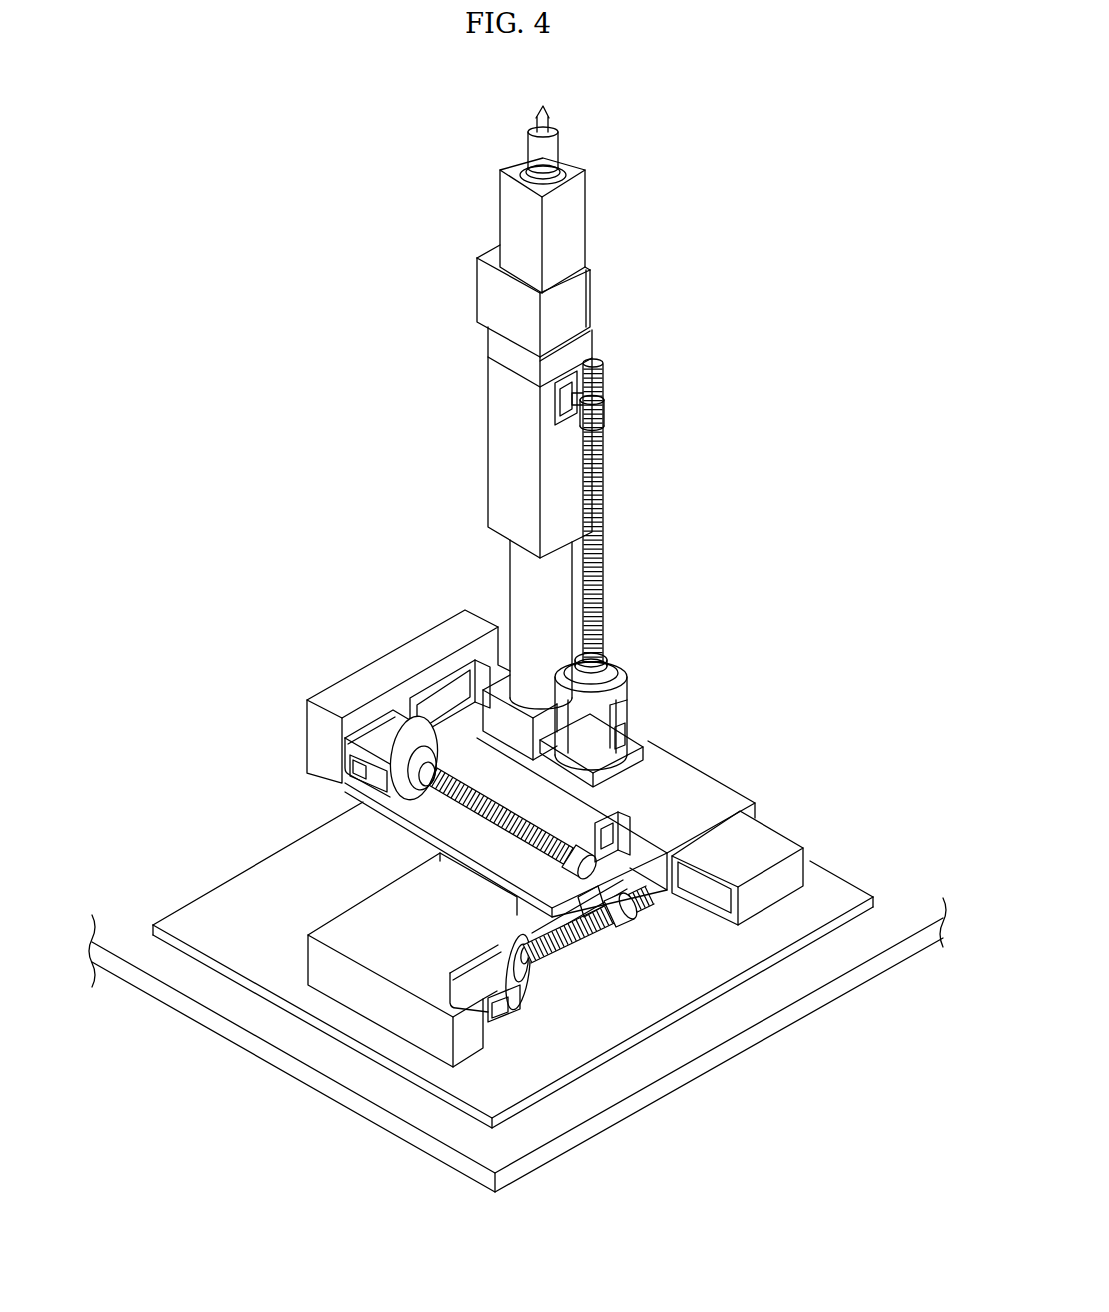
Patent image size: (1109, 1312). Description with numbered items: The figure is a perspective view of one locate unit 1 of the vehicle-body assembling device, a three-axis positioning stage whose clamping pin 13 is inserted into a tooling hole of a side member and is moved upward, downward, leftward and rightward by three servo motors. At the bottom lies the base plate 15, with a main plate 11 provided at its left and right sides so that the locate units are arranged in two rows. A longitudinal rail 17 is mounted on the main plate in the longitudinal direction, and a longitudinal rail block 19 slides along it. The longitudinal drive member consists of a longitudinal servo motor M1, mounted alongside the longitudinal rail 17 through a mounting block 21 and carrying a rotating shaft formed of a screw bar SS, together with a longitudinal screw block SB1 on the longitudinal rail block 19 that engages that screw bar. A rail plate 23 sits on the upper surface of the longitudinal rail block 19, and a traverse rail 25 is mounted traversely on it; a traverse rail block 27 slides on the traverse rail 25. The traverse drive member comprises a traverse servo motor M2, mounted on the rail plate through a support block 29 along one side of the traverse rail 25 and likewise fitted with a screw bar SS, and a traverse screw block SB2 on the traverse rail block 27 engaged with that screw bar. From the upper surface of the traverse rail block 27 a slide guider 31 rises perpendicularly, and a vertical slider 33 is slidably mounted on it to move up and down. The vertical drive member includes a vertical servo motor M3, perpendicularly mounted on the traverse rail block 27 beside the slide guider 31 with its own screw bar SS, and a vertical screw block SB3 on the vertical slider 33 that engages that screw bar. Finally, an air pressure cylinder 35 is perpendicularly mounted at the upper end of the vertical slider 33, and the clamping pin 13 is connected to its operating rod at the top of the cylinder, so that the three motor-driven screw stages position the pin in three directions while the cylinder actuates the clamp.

The locate unit 1 is at (728, 577).
The main plate 11 is at (788, 1015).
The clamping pin 13 is at (550, 149).
The base plate 15 is at (802, 942).
The longitudinal rail 17 is at (375, 903).
The longitudinal rail block 19 is at (533, 930).
The mounting block 21 is at (408, 1023).
The rail plate 23 is at (360, 793).
The traverse rail 25 is at (771, 838).
The traverse rail block 27 is at (716, 783).
The support block 29 is at (388, 669).
The slide guider 31 is at (518, 562).
The vertical slider 33 is at (495, 395).
The air pressure cylinder 35 is at (580, 217).
The longitudinal servo motor M1 is at (495, 982).
The traverse servo motor M2 is at (365, 730).
The vertical servo motor M3 is at (621, 673).
The screw bar SS is at (577, 937).
The longitudinal screw block SB1 is at (620, 917).
The traverse screw block SB2 is at (600, 852).
The vertical screw block SB3 is at (603, 408).